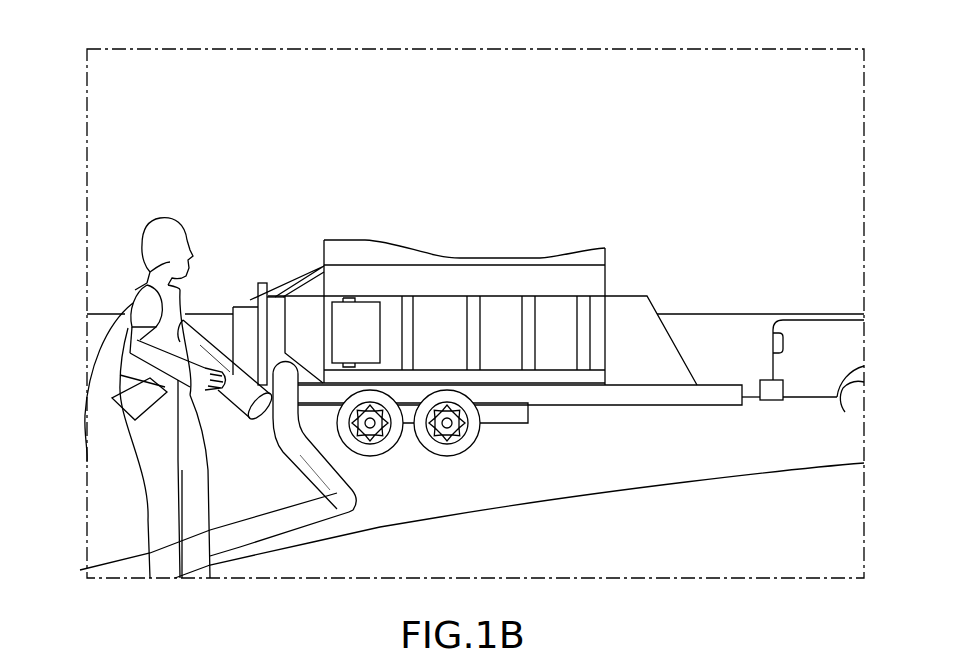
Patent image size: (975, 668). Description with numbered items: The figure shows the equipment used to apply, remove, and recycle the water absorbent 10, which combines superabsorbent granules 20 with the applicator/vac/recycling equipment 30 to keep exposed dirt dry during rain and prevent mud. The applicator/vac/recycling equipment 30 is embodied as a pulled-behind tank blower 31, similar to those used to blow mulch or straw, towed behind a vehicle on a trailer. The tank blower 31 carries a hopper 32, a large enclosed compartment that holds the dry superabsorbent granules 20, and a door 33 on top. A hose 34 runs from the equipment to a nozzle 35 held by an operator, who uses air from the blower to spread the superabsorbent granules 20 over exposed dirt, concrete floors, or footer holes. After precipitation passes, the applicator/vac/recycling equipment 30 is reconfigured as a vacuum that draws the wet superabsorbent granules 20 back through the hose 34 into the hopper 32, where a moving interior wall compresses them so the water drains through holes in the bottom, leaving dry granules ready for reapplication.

The water absorbent 10 is at (445, 90).
The superabsorbent granules 20 is at (257, 450).
The applicator/vac/recycling equipment 30 is at (525, 312).
The pulled-behind tank blower 31 is at (502, 300).
The hopper 32 is at (408, 258).
The door 33 is at (452, 258).
The hose 34 is at (300, 520).
The nozzle 35 is at (228, 360).